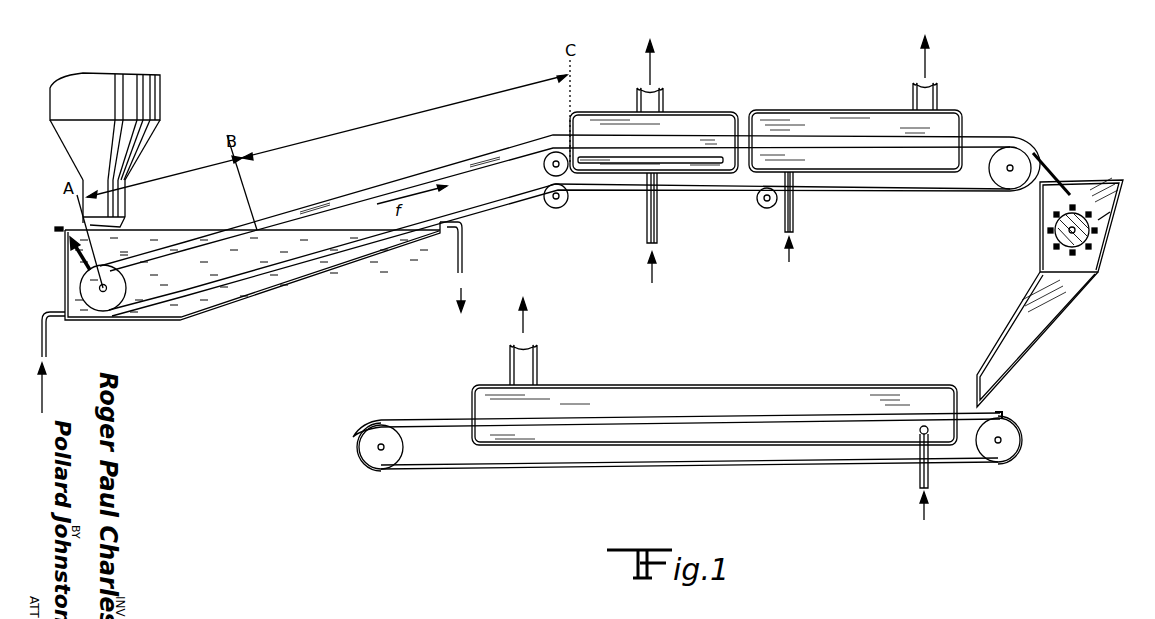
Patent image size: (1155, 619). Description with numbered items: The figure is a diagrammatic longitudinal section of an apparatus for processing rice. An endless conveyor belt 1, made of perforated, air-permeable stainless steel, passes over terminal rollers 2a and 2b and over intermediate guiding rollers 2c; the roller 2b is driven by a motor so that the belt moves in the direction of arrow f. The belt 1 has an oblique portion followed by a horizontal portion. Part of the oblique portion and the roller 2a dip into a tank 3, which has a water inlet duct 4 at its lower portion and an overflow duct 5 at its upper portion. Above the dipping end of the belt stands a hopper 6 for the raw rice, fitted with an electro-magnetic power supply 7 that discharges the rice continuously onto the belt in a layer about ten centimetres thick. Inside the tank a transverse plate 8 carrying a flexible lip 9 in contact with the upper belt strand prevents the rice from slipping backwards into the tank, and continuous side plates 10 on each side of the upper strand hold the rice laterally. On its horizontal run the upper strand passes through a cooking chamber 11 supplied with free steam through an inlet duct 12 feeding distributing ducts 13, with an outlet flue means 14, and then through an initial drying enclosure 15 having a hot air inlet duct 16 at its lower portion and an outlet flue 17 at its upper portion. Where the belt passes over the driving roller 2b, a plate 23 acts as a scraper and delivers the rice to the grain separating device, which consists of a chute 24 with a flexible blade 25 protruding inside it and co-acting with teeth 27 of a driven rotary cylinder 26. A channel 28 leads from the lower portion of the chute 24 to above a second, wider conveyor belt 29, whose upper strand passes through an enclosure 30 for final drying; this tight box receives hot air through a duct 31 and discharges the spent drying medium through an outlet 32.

The endless conveyor belt 1 is at (330, 250).
The terminal roller 2a is at (105, 300).
The driving roller 2b is at (1008, 172).
The intermediate guiding roller 2c is at (548, 170).
The tank 3 is at (253, 298).
The water inlet duct 4 is at (42, 333).
The overflow duct 5 is at (464, 258).
The hopper 6 is at (160, 88).
The electro-magnetic power supply 7 is at (127, 188).
The transverse plate 8 is at (69, 238).
The flexible lip 9 is at (88, 273).
The side plates 10 is at (375, 190).
The cooking chamber 11 is at (585, 126).
The steam inlet duct 12 is at (660, 205).
The distributing ducts 13 is at (633, 162).
The outlet flue means 14 is at (665, 95).
The initial drying enclosure 15 is at (780, 122).
The hot air inlet duct 16 is at (795, 205).
The outlet flue 17 is at (938, 95).
The scraper plate 23 is at (1050, 174).
The chute 24 is at (1040, 207).
The flexible blade 25 is at (1104, 218).
The driven rotary cylinder 26 is at (1090, 236).
The teeth 27 is at (1055, 246).
The channel 28 is at (1045, 332).
The second conveyor belt 29 is at (713, 466).
The final drying enclosure 30 is at (693, 402).
The hot air duct 31 is at (930, 474).
The outlet 32 is at (537, 365).